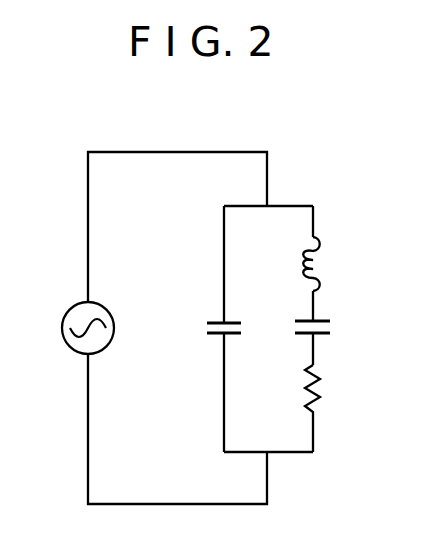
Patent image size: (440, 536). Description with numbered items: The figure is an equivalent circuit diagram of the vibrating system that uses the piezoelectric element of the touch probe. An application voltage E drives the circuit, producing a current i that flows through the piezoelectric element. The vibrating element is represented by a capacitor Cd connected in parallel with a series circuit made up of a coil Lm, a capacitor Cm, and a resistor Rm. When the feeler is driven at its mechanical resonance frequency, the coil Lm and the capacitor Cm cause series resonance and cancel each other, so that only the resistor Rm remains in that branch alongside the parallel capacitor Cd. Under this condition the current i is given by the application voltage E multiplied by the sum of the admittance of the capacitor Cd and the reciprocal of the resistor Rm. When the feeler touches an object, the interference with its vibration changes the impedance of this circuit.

The application voltage E is at (72, 328).
The current i is at (252, 185).
The capacitor Cd is at (212, 320).
The coil Lm is at (320, 266).
The capacitor Cm is at (333, 329).
The resistor Rm is at (319, 396).